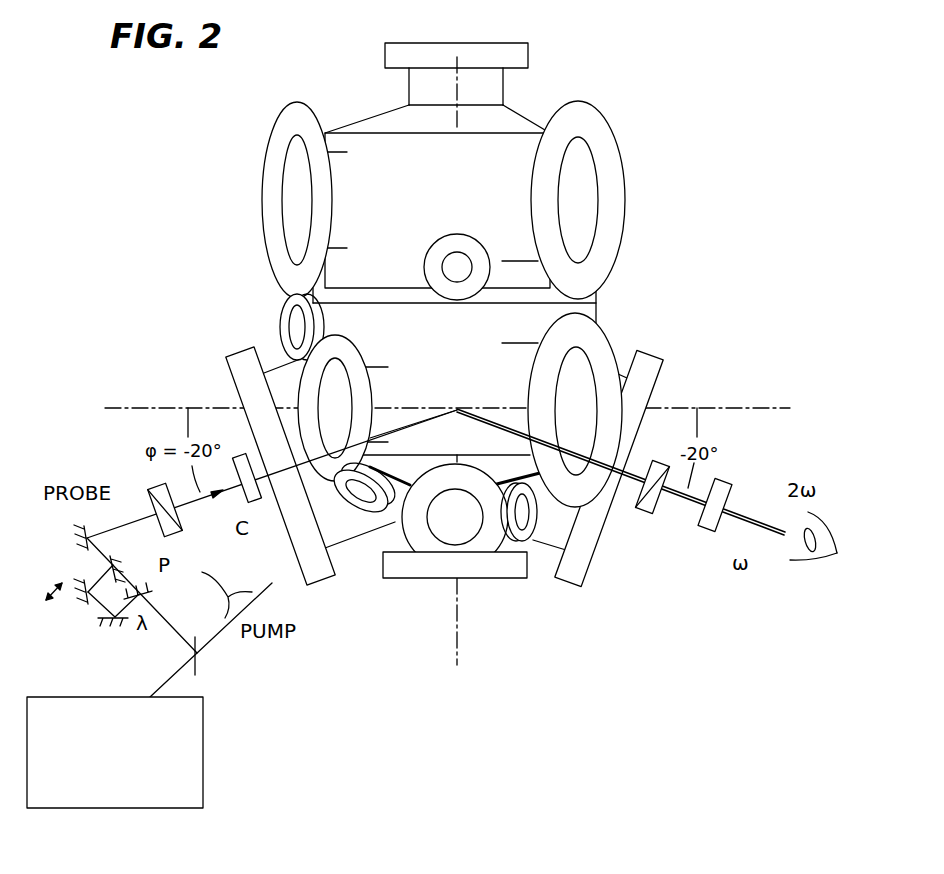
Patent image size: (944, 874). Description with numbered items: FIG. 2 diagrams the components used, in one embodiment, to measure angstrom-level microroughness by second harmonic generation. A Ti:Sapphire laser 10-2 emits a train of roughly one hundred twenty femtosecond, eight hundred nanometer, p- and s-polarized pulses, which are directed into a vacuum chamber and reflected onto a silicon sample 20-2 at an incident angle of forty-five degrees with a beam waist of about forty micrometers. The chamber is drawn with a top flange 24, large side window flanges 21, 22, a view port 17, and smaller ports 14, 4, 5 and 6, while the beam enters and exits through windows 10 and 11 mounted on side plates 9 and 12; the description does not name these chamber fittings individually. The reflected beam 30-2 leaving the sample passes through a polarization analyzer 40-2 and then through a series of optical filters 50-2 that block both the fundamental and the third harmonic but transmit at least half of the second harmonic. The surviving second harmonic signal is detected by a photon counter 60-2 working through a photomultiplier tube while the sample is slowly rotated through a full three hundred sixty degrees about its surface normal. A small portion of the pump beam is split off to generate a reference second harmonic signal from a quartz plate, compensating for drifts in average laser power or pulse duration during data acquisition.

The top flange port 24 is at (441, 55).
The left window flange 21 is at (285, 210).
The right window flange 22 is at (566, 210).
The view port 17 is at (446, 278).
The small port 14 is at (288, 330).
The input window 10 is at (323, 402).
The output window 11 is at (563, 401).
The output side plate 12 is at (626, 396).
The input side plate 9 is at (279, 454).
The port ring 4 is at (362, 490).
The bottom port 5 is at (448, 529).
The small port ring 6 is at (524, 512).
The Si(100) sample 20-2 is at (490, 412).
The reflected beam 30-2 is at (598, 457).
The polarization analyzer 40-2 is at (655, 452).
The optical filters 50-2 is at (720, 477).
The photon counter 60-2 is at (818, 562).
The Ti:Sapphire laser 10-2 is at (87, 695).